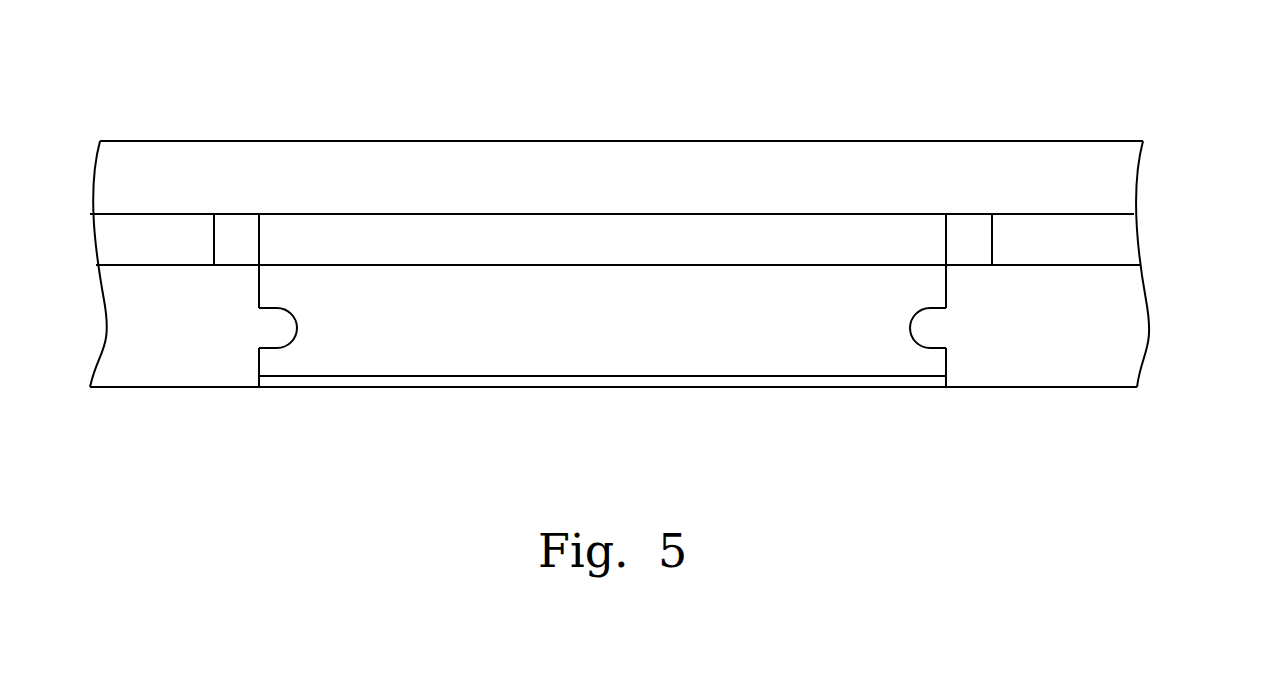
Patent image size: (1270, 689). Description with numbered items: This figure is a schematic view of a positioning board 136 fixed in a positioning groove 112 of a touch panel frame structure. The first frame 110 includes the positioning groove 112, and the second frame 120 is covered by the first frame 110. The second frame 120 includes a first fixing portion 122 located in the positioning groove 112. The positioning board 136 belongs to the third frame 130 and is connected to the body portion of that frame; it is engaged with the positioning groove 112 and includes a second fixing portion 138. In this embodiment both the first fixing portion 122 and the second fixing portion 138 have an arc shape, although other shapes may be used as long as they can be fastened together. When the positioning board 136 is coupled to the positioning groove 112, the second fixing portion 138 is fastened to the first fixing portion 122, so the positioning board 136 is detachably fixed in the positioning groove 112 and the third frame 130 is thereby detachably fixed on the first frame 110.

The first frame 110 is at (1125, 241).
The positioning groove 112 is at (240, 242).
The second frame 120 is at (1128, 323).
The first fixing portion 122 is at (935, 328).
The third frame 130 is at (877, 139).
The positioning board 136 is at (577, 293).
The second fixing portion 138 is at (908, 345).